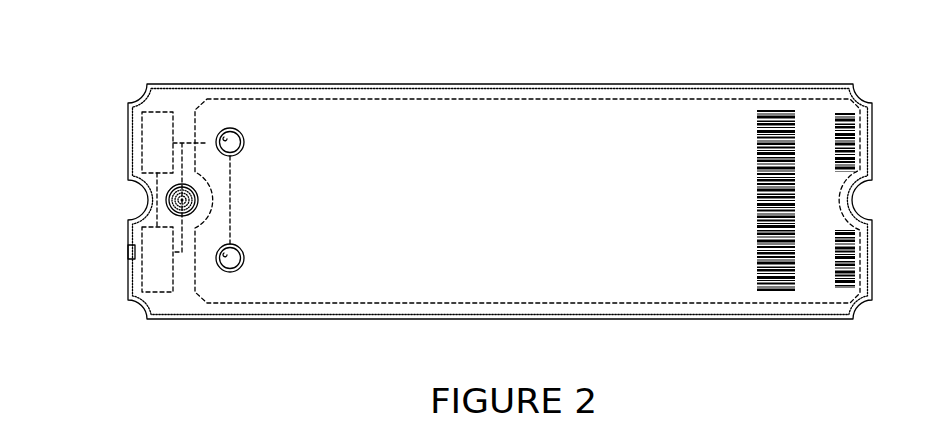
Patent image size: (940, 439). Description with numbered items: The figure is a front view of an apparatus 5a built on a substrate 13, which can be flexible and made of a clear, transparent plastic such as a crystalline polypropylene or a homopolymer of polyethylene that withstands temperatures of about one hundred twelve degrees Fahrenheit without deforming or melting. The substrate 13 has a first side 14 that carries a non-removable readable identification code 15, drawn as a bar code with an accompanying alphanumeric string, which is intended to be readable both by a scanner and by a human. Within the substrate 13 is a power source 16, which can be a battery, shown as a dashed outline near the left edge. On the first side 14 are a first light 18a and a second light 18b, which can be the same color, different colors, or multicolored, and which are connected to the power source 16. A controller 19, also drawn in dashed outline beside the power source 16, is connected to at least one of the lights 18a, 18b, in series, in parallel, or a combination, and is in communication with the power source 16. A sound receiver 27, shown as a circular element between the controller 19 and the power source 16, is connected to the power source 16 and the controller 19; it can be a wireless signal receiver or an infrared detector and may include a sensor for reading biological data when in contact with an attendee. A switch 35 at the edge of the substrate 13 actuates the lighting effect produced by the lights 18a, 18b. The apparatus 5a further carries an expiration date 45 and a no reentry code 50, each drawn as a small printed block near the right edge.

The apparatus 5a is at (802, 345).
The substrate 13 is at (500, 85).
The first side 14 is at (470, 237).
The non-removable readable identification code 15 is at (698, 110).
The power source 16 is at (157, 272).
The first light 18a is at (232, 257).
The second light 18b is at (232, 132).
The controller 19 is at (157, 140).
The sound receiver 27 is at (170, 201).
The switch 35 is at (128, 251).
The expiration date 45 is at (857, 230).
The no reentry code 50 is at (857, 113).